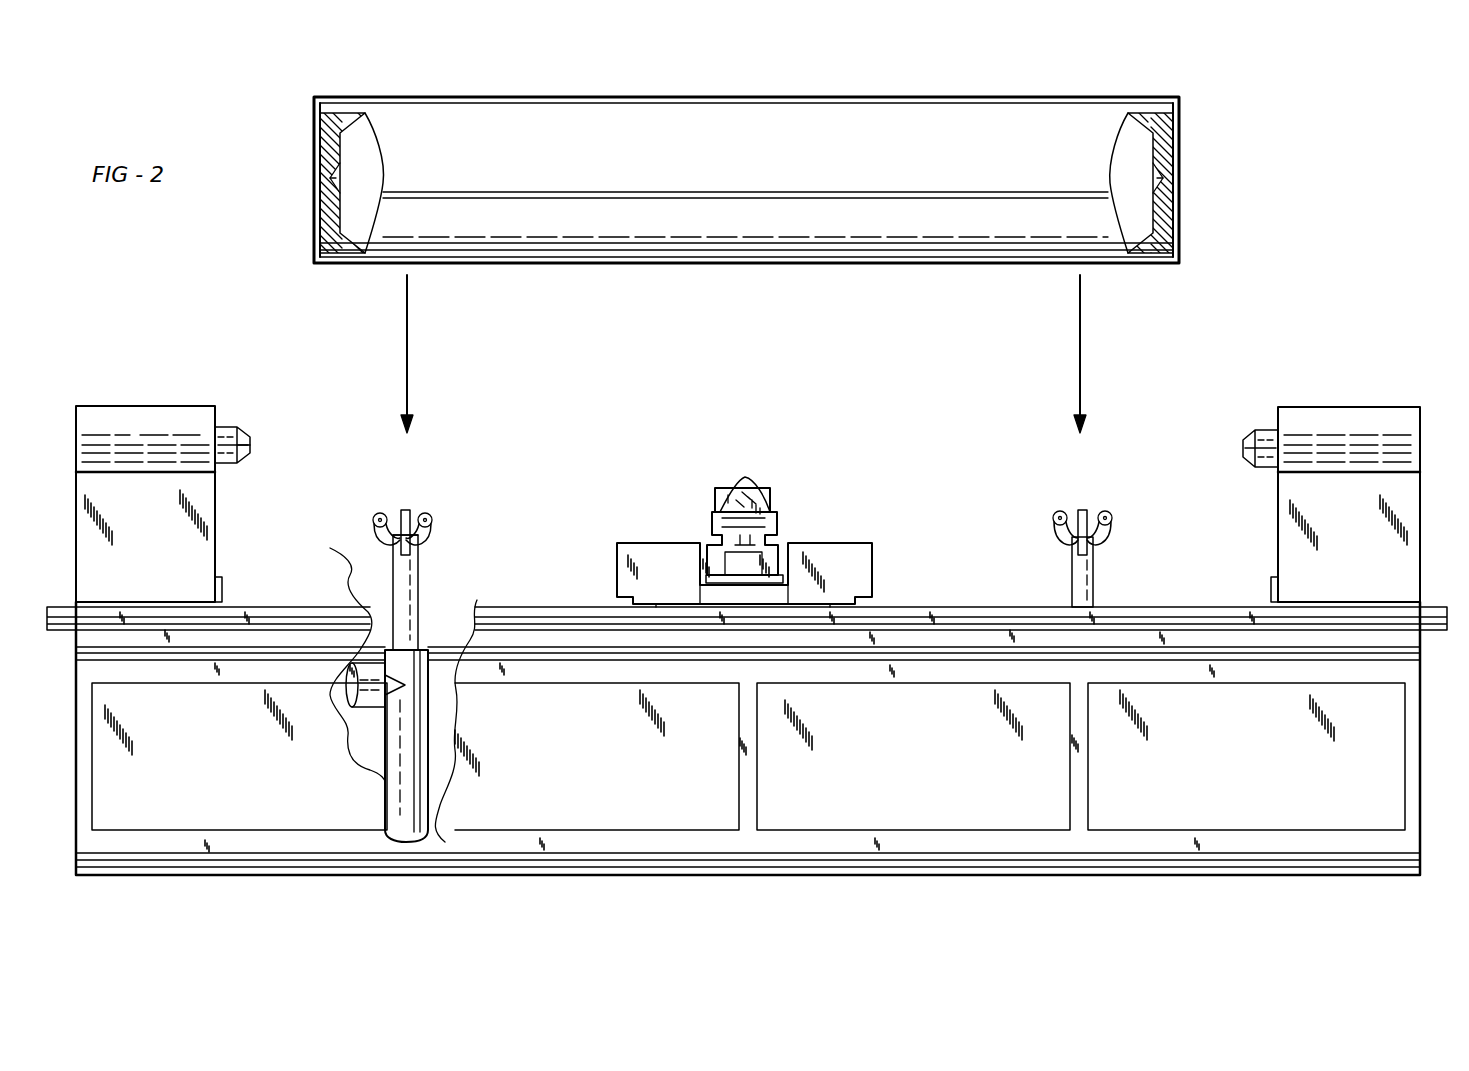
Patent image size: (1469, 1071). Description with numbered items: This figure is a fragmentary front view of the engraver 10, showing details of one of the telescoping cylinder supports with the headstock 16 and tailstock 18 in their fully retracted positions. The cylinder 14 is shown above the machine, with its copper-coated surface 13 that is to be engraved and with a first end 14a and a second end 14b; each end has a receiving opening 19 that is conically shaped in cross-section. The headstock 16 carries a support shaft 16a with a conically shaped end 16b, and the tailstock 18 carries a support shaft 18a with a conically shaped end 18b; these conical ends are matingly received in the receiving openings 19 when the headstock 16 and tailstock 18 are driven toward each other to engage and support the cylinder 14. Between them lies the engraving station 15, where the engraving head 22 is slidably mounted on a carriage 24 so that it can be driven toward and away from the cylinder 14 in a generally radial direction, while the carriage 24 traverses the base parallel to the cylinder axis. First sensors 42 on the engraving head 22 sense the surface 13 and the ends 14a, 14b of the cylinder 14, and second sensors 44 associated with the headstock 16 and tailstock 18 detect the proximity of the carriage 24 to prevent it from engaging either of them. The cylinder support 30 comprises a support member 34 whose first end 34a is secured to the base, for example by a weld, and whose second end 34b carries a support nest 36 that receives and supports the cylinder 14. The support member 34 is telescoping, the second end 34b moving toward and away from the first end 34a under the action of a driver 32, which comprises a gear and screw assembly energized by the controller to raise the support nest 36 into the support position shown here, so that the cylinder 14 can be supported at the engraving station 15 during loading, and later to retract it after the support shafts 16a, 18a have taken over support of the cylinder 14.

The engraver 10 is at (222, 370).
The surface 13 is at (818, 245).
The cylinder 14 is at (345, 97).
The first end 14a is at (318, 125).
The second end 14b is at (1180, 122).
The engraving station 15 is at (760, 457).
The headstock 16 is at (143, 415).
The support shaft 16a is at (228, 435).
The conically shaped end 16b is at (247, 450).
The tailstock 18 is at (1340, 415).
The support shaft 18a is at (1262, 420).
The conically shaped end 18b is at (1243, 448).
The receiving opening 19 is at (330, 183).
The engraving head 22 is at (735, 485).
The carriage 24 is at (828, 543).
The cylinder support 30 is at (405, 587).
The driver 32 is at (370, 607).
The support member 34 is at (420, 607).
The first end 34a is at (440, 805).
The second end 34b is at (420, 555).
The support nest 36 is at (430, 515).
The first sensors 42 is at (715, 500).
The second sensors 44 is at (222, 583).